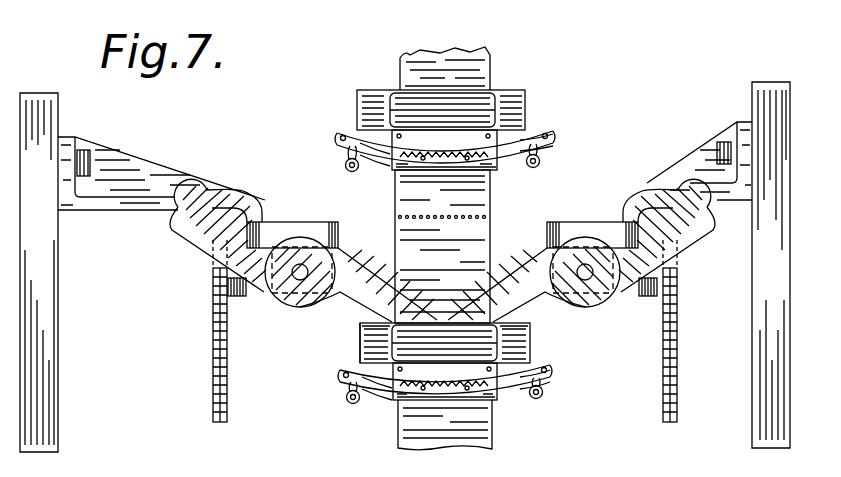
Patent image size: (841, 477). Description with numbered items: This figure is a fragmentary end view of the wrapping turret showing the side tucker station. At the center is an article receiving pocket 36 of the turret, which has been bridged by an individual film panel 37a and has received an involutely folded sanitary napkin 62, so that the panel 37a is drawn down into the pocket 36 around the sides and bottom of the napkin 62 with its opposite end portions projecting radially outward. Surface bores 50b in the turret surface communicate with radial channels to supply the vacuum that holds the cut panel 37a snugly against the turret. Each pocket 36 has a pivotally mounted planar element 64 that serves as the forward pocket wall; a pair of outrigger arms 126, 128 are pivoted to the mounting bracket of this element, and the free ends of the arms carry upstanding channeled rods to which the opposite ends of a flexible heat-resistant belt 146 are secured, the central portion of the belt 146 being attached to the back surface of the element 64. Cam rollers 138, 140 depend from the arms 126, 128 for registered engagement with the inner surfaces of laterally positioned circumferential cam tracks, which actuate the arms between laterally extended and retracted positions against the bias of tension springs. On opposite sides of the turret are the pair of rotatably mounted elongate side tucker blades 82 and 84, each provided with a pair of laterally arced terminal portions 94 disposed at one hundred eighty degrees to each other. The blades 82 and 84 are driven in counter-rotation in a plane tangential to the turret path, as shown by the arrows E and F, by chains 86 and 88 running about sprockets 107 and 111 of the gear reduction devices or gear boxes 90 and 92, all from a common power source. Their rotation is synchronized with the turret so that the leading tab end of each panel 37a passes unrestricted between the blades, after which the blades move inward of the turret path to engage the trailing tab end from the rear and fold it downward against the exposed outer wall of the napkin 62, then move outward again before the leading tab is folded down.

The article receiving pocket 36 is at (408, 95).
The sanitary napkin 62 is at (446, 100).
The film panel 37a is at (510, 92).
The planar element 64 is at (468, 132).
The flexible tape or belt 146 is at (540, 132).
The outrigger arm 126 is at (556, 148).
The cam roller 138 is at (533, 169).
The cam roller 140 is at (349, 169).
The outrigger arm 128 is at (374, 160).
The surface bores 50b is at (470, 221).
The side tucker blade 82 is at (500, 278).
The side tucker blade 84 is at (352, 270).
The gear reduction device 92 is at (358, 328).
The gear reduction device 90 is at (603, 282).
The laterally arced terminal portion 94 is at (231, 155).
The sprocket 107 is at (680, 270).
The chain 86 is at (679, 352).
The chain 88 is at (213, 406).
The sprocket 111 is at (213, 277).
The arrow indicating blade rotation E is at (173, 242).
The arrow indicating blade rotation F is at (712, 218).